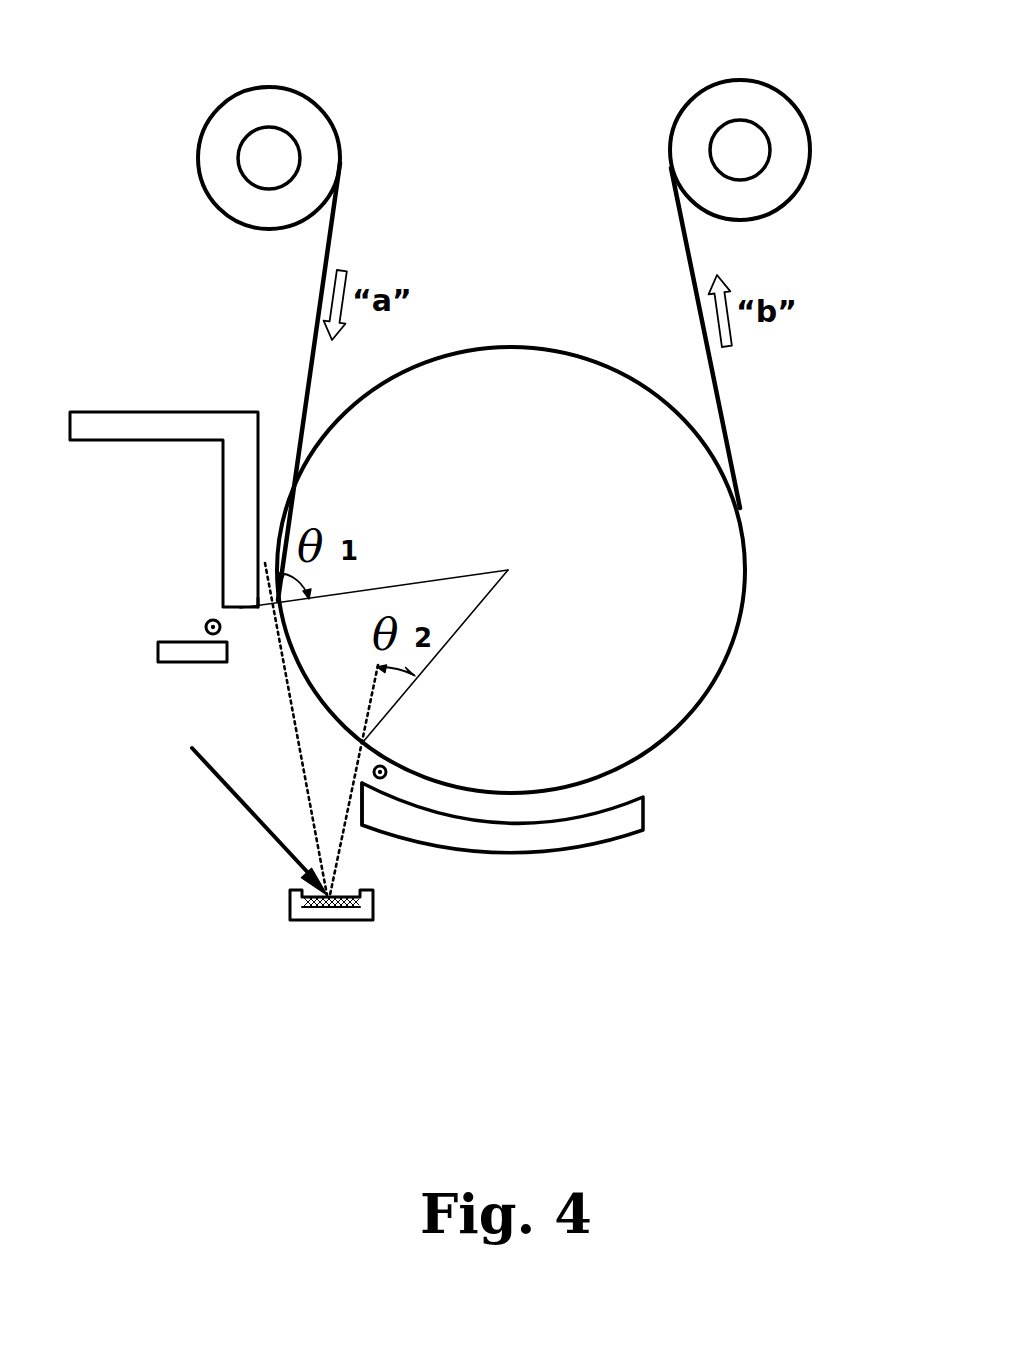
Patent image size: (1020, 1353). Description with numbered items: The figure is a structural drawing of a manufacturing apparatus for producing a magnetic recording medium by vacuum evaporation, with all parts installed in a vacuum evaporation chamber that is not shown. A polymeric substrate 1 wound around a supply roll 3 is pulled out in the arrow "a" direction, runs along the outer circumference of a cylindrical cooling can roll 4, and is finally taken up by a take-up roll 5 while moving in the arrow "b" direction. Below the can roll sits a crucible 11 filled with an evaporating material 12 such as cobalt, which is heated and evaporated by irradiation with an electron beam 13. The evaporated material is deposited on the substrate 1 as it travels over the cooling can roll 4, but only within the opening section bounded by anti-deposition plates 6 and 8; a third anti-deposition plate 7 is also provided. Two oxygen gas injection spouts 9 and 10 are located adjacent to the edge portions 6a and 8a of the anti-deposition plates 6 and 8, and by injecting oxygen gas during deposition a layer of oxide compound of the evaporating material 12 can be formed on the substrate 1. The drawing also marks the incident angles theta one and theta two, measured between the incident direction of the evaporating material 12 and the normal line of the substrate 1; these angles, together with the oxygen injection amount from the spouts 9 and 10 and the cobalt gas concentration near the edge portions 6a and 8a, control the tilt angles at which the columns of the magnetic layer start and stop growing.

The polymeric substrate 1 is at (336, 203).
The supply roll 3 is at (238, 93).
The cylindrical cooling can roll 4 is at (513, 345).
The take-up roll 5 is at (763, 83).
The anti-deposition plate 6 is at (225, 412).
The edge portion 6a is at (222, 605).
The anti-deposition plate 7 is at (185, 665).
The anti-deposition plate 8 is at (600, 843).
The edge portion 8a is at (363, 830).
The oxygen gas injection spout 9 is at (205, 626).
The oxygen gas injection spout 10 is at (390, 778).
The crucible 11 is at (368, 903).
The evaporating material 12 is at (298, 900).
The electron beam 13 is at (230, 795).